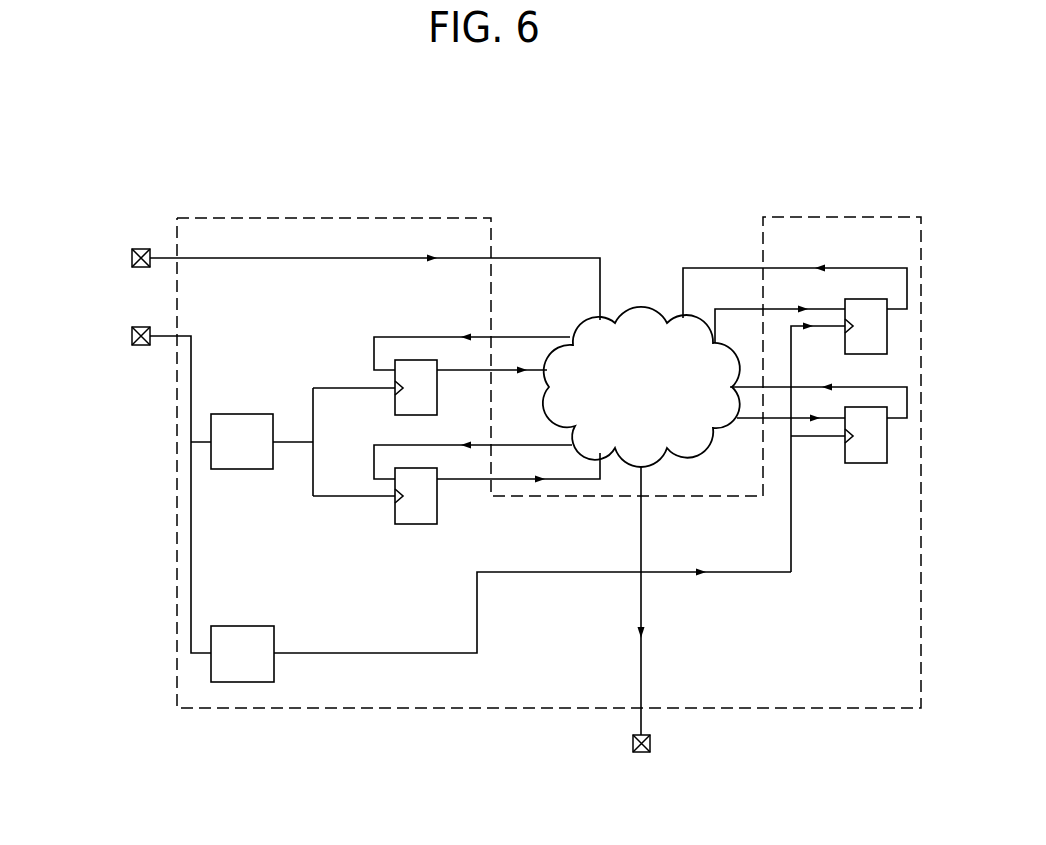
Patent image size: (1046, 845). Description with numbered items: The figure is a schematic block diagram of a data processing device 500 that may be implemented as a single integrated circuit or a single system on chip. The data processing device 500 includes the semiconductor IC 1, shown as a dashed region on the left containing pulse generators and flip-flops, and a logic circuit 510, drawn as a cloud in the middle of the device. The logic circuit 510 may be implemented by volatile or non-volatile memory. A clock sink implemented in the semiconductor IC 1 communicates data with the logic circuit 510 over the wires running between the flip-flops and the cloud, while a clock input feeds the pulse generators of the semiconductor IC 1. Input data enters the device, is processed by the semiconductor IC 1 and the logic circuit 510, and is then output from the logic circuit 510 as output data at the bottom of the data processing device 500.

The semiconductor IC 1 is at (334, 218).
The data processing device 500 is at (796, 153).
The logic circuit 510 is at (639, 300).